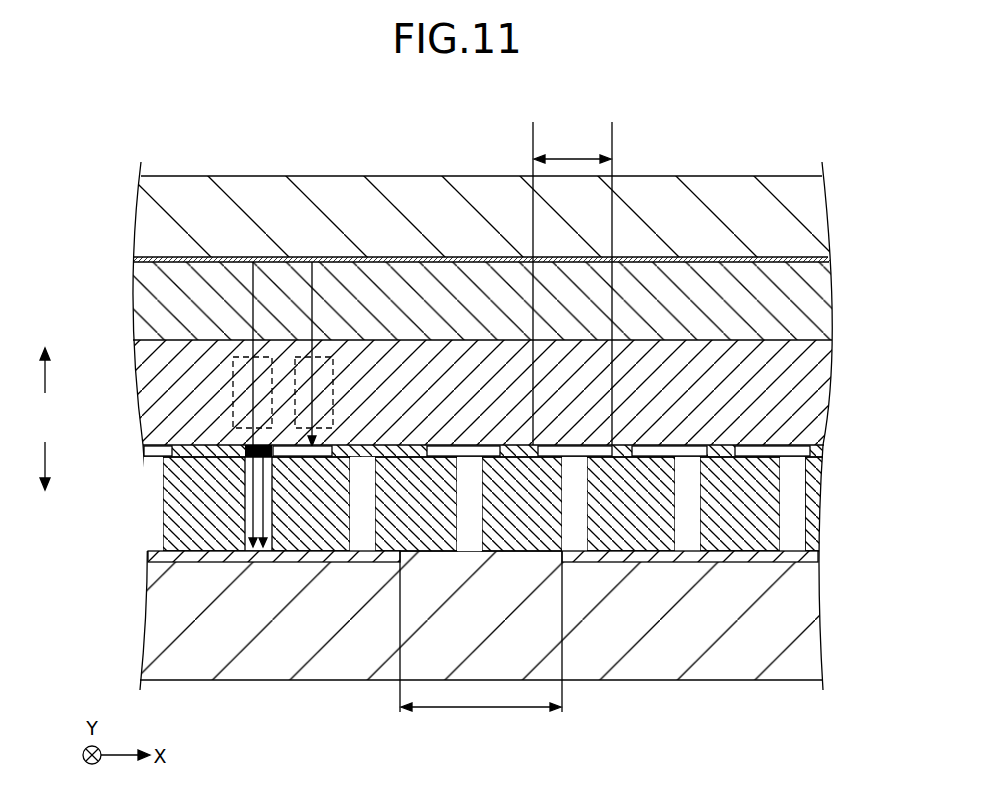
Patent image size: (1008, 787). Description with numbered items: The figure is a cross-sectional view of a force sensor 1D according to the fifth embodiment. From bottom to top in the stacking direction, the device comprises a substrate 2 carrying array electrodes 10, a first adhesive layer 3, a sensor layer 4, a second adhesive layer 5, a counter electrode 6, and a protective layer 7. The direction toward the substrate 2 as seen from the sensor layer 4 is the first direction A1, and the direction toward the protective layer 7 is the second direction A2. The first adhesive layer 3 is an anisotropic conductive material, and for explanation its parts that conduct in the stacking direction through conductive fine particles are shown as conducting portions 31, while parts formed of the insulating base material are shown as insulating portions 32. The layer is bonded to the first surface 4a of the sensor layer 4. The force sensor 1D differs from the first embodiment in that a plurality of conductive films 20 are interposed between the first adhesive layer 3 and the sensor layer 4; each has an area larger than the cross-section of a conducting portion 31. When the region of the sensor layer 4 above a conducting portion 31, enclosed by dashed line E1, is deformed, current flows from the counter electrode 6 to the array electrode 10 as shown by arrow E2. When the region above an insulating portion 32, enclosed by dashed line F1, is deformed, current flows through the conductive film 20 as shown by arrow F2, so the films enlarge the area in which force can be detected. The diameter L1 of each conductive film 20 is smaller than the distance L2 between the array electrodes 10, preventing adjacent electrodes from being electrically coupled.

The force sensor 1D is at (782, 136).
The substrate 2 is at (805, 605).
The first adhesive layer 3 is at (813, 480).
The sensor layer 4 is at (805, 350).
The first surface of the sensor layer 4a is at (226, 462).
The second adhesive layer 5 is at (795, 310).
The counter electrode 6 is at (805, 262).
The protective layer 7 is at (805, 215).
The array electrode 10 is at (160, 553).
The conductive film 20 is at (152, 447).
The conducting portion 31 is at (155, 498).
The insulating portion 32 is at (297, 532).
The dashed line E1 is at (233, 372).
The arrow E2 is at (253, 302).
The dashed line F1 is at (335, 382).
The arrow F2 is at (313, 305).
The diameter of the conductive film L1 is at (572, 283).
The distance between the array electrodes L2 is at (481, 645).
The first direction A1 is at (45, 481).
The second direction A2 is at (45, 356).